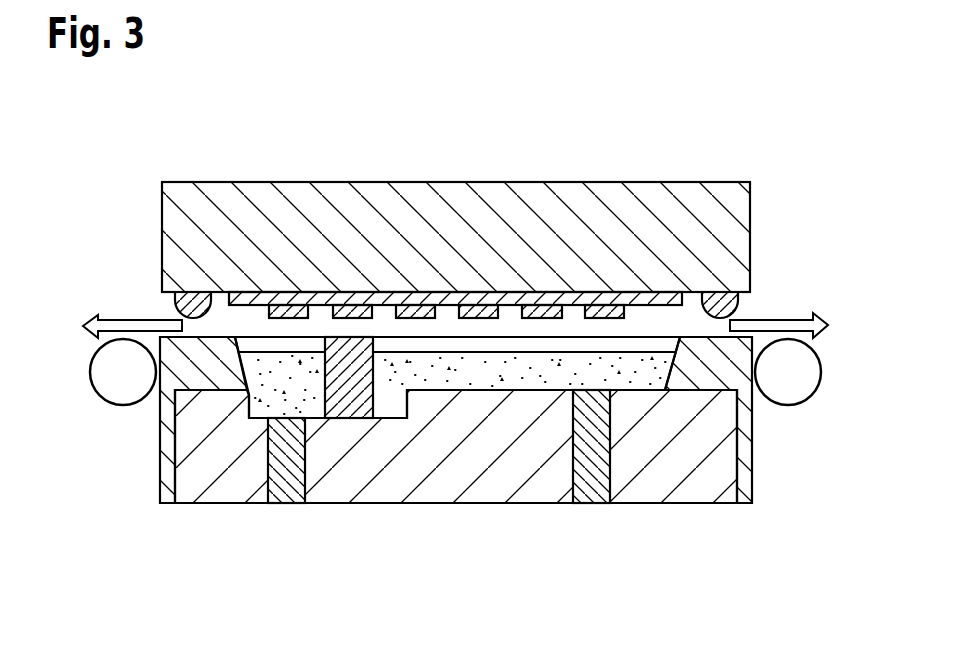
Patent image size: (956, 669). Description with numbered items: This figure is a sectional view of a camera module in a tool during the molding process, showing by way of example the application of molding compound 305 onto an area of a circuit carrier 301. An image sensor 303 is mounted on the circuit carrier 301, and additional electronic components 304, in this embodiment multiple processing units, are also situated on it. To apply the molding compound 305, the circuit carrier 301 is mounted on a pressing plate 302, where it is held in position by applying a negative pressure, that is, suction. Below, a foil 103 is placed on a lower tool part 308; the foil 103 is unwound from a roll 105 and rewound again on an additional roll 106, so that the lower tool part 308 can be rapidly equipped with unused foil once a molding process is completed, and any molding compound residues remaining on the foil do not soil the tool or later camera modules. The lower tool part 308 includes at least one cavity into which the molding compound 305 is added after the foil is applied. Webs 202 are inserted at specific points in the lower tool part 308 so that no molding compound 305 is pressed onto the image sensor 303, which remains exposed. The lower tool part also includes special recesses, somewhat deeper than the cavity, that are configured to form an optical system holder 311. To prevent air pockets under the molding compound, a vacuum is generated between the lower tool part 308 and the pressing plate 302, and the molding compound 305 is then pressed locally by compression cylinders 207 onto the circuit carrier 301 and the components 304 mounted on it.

The foil 103 is at (707, 363).
The roll 105 is at (120, 382).
The additional roll 106 is at (793, 382).
The web 202 is at (348, 360).
The compression cylinder 207 is at (287, 473).
The circuit carrier 301 is at (450, 298).
The pressing plate 302 is at (228, 197).
The image sensor 303 is at (352, 305).
The electronic components 304 is at (543, 314).
The molding compound 305 is at (503, 370).
The lower tool part 308 is at (677, 378).
The optical system holder 311 is at (392, 407).